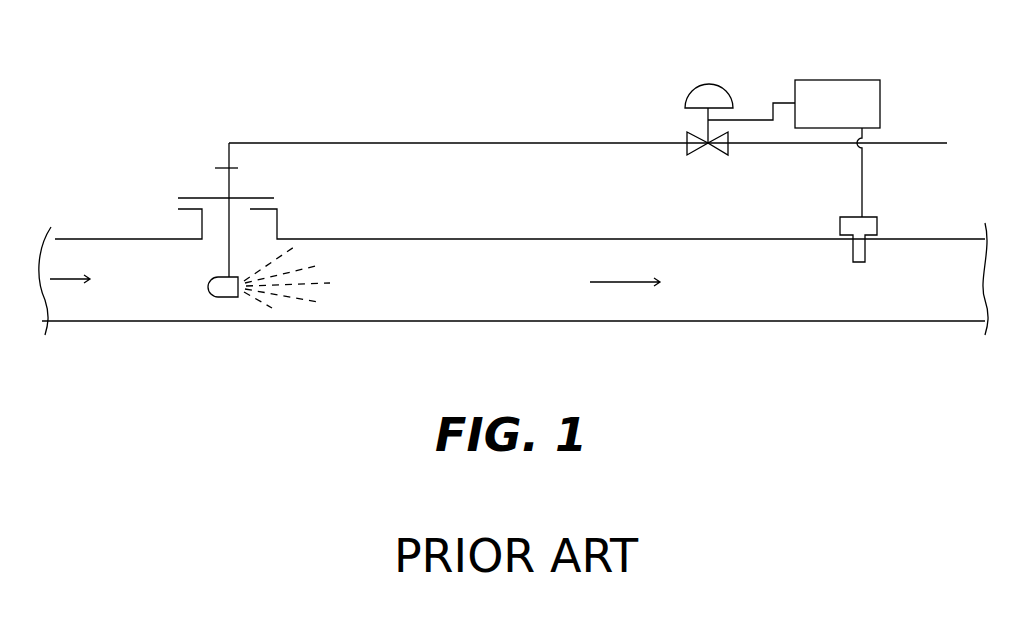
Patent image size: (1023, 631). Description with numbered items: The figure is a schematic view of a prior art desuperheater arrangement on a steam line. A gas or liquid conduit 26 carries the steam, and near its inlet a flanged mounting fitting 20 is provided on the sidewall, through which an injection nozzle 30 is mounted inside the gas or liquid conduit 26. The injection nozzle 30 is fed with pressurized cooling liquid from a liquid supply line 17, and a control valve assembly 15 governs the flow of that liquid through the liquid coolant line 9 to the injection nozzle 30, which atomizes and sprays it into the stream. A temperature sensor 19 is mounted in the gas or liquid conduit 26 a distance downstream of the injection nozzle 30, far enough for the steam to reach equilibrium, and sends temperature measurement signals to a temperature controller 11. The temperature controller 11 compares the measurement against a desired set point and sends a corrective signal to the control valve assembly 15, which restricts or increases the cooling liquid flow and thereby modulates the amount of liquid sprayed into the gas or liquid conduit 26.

The liquid coolant line 9 is at (392, 143).
The temperature controller 11 is at (850, 80).
The control valve assembly 15 is at (688, 143).
The liquid supply line 17 is at (928, 143).
The temperature sensor 19 is at (878, 225).
The flanged mounting fitting 20 is at (276, 228).
The gas or liquid conduit 26 is at (104, 221).
The injection nozzle 30 is at (232, 295).